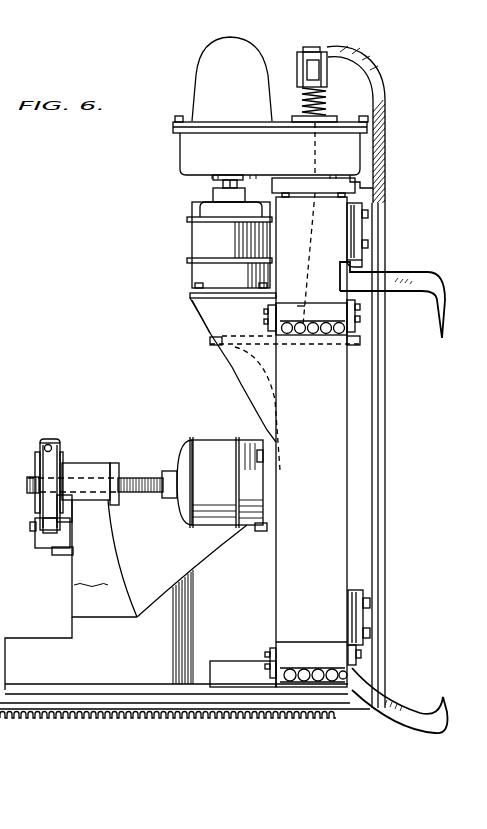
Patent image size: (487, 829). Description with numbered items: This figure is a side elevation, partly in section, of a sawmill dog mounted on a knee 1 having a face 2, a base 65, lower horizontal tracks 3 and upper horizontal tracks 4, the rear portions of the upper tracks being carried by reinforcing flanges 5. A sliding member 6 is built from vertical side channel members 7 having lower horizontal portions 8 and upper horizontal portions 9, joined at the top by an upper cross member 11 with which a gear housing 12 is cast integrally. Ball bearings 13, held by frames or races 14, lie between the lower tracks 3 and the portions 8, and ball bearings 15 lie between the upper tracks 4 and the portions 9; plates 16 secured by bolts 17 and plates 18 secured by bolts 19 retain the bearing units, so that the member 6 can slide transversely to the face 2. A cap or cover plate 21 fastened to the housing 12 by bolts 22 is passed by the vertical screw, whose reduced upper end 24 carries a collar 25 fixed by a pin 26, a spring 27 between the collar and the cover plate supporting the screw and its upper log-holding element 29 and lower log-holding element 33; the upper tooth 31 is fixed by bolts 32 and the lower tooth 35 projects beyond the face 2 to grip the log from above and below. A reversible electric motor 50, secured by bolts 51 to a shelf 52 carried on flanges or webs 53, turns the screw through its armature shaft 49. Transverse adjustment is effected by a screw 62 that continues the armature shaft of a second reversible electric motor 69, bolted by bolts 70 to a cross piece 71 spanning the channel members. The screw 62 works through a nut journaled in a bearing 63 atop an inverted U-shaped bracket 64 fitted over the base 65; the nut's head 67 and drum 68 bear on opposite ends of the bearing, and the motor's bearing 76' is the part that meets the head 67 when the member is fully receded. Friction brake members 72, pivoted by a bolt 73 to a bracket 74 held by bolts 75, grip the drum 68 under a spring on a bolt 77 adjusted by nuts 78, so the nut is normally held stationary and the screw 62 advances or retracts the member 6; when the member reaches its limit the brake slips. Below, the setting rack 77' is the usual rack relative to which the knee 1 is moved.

The knee 1 is at (378, 372).
The face 2 is at (386, 430).
The lower horizontal tracks 3 is at (232, 670).
The upper horizontal tracks 4 is at (210, 341).
The reinforcing flanges 5 is at (250, 358).
The member 6 is at (313, 432).
The vertical side channel members 7 is at (340, 210).
The lower horizontal portions 8 is at (297, 641).
The upper horizontal portions 9 is at (301, 306).
The upper cross member 11 is at (375, 180).
The gear housing 12 is at (183, 156).
The ball bearings 13 is at (310, 670).
The frames or races 14 is at (294, 690).
The ball bearings 15 is at (312, 325).
The plates 16 is at (266, 322).
The bolts 17 is at (268, 656).
The plates 18 is at (358, 333).
The bolts 19 is at (268, 312).
The cap or cover plate 21 is at (271, 121).
The bolts 22 is at (182, 110).
The upper end of the screw 24 is at (312, 47).
The collar 25 is at (298, 58).
The pin 26 is at (320, 69).
The spring 27 is at (326, 96).
The upper log-holding element 29 is at (364, 232).
The log-engaging portion or tooth 31 is at (432, 277).
The bolts 32 is at (368, 246).
The lower log-holding element 33 is at (366, 622).
The log-engaging portion or tooth 35 is at (410, 712).
The armature shaft 49 is at (214, 182).
The reversible electric motor 50 is at (196, 240).
The bolts 51 is at (258, 283).
The shelf 52 is at (190, 296).
The flanges or webs 53 is at (200, 312).
The screw 62 is at (141, 478).
The bearing 63 is at (88, 463).
The inverted U-shaped bracket 64 is at (110, 539).
The base 65 is at (38, 638).
The head 67 is at (114, 463).
The drum 68 is at (35, 460).
The reversible electric motor 69 is at (220, 482).
The bolts 70 is at (259, 508).
The cross piece 71 is at (266, 530).
The friction brake members 72 is at (46, 506).
The bolt 73 is at (30, 526).
The bracket 74 is at (42, 540).
The bolts 75 is at (66, 541).
The coupling nut 76' is at (162, 512).
The bolt 77 is at (51, 432).
The setting rack 77' is at (185, 714).
The nuts 78 is at (45, 446).